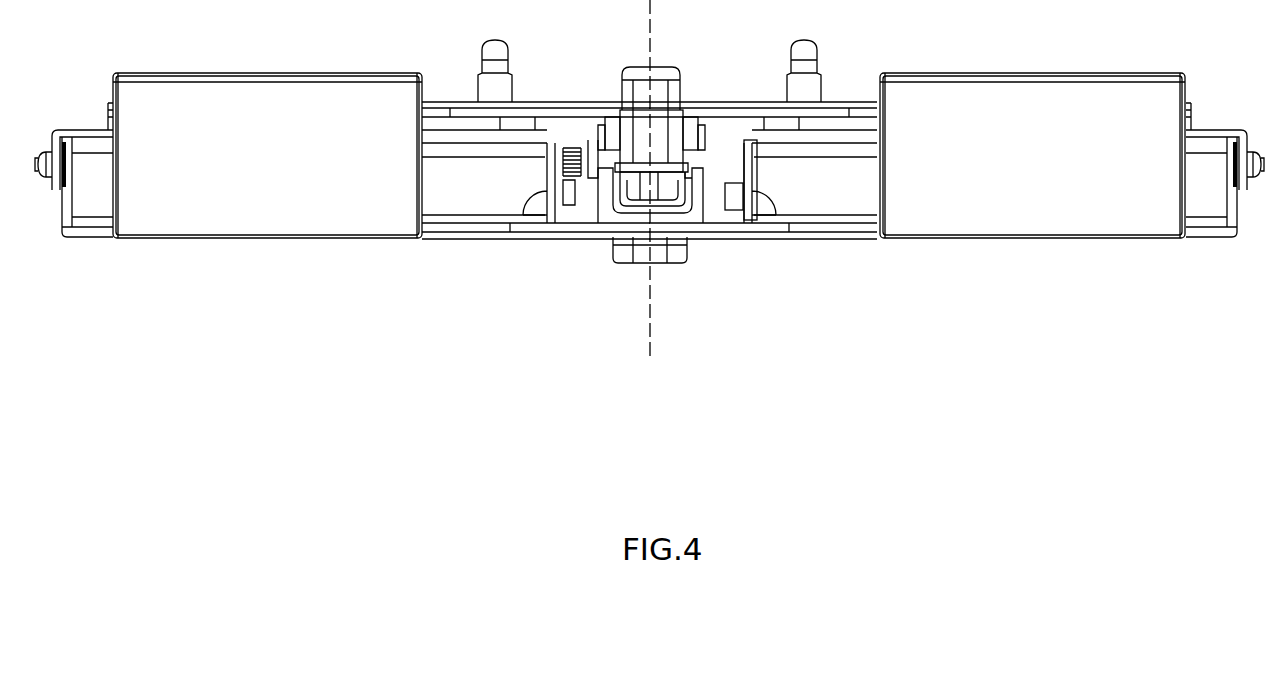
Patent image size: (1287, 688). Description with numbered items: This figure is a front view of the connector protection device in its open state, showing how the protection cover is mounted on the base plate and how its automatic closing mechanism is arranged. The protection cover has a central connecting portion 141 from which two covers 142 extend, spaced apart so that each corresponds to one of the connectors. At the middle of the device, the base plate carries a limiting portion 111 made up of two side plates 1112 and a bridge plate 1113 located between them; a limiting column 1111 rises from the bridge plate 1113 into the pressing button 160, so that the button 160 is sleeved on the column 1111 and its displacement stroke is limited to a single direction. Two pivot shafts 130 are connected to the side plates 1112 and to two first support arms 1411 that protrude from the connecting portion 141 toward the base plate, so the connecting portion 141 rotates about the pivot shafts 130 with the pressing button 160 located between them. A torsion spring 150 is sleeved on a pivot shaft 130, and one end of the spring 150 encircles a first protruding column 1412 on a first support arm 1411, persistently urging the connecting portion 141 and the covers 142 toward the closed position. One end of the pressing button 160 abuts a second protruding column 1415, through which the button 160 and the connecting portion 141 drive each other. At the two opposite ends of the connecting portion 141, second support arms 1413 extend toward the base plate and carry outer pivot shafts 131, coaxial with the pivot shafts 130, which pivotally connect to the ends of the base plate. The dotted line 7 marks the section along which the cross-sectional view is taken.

The dotted line 7- 7 is at (650, 356).
The limiting portion 111 is at (645, 332).
The limiting column 1111 is at (645, 190).
The side plates 1112 is at (613, 195).
The bridge plate 1113 is at (625, 207).
The pivot shaft 130 is at (603, 160).
The outer pivot shaft 131 is at (37, 178).
The connecting portion 141 is at (853, 219).
The first support arm 1411 is at (758, 162).
The first protruding column 1412 is at (731, 196).
The second support arm 1413 is at (68, 200).
The second protruding column 1415 is at (686, 178).
The cover 142 is at (388, 219).
The torsion spring 150 is at (568, 142).
The pressing button 160 is at (668, 88).